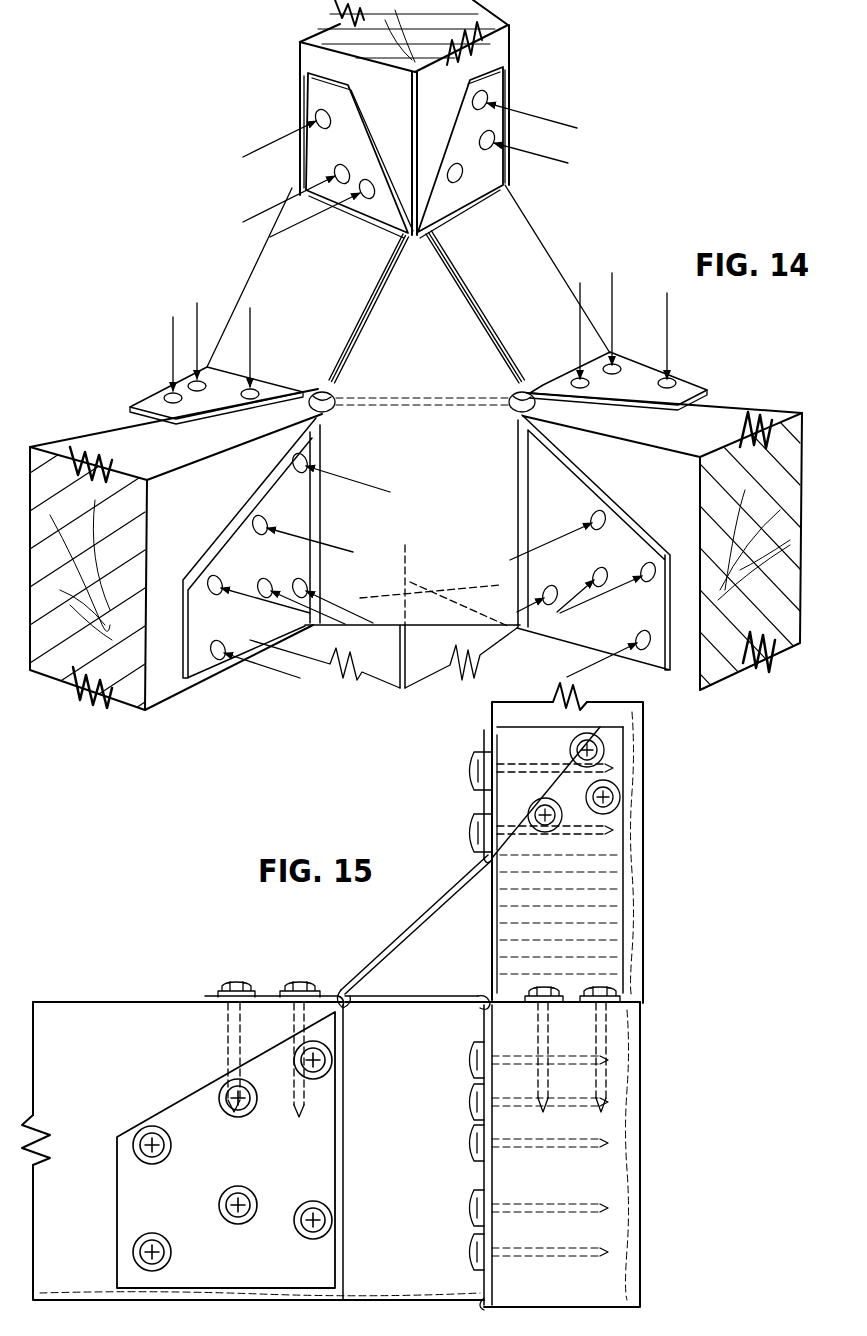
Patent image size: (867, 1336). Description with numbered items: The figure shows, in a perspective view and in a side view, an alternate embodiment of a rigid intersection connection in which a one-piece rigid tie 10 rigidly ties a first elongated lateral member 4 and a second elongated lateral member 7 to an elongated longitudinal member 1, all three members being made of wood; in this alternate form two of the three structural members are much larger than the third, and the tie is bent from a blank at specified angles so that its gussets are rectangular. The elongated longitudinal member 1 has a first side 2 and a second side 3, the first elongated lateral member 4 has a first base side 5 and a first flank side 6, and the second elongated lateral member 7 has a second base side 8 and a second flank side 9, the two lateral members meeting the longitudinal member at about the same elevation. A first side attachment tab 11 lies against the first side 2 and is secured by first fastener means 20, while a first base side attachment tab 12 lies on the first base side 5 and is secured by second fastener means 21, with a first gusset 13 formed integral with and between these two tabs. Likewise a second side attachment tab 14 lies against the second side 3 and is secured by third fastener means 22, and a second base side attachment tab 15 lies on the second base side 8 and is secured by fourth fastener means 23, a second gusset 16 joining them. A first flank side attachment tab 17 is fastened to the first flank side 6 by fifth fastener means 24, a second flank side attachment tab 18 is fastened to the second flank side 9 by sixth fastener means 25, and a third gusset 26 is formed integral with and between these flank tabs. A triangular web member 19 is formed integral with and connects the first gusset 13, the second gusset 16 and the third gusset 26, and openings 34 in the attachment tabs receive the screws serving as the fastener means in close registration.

In FIG. 14, the elongated longitudinal member 1 is at (288, 64).
In FIG. 15, the elongated longitudinal member 1 is at (650, 786).
In FIG. 14, the first side 2 is at (385, 108).
In FIG. 15, the first side 2 is at (490, 713).
In FIG. 14, the second side 3 is at (447, 108).
In FIG. 15, the second side 3 is at (528, 733).
In FIG. 14, the first elongated lateral member 4 is at (58, 428).
In FIG. 15, the first elongated lateral member 4 is at (68, 996).
In FIG. 14, the first base side 5 is at (139, 449).
In FIG. 15, the first base side 5 is at (118, 1003).
In FIG. 14, the first flank side 6 is at (192, 517).
In FIG. 15, the first flank side 6 is at (80, 1068).
In FIG. 14, the second elongated lateral member 7 is at (780, 406).
In FIG. 15, the second elongated lateral member 7 is at (644, 1065).
In FIG. 14, the second base side 8 is at (720, 439).
In FIG. 15, the second base side 8 is at (642, 998).
In FIG. 14, the second flank side 9 is at (674, 501).
In FIG. 15, the second flank side 9 is at (486, 1305).
In FIG. 14, the one-piece rigid tie 10 is at (516, 88).
In FIG. 15, the one-piece rigid tie 10 is at (625, 765).
In FIG. 14, the first side attachment tab 11 is at (312, 89).
In FIG. 15, the first side attachment tab 11 is at (483, 737).
In FIG. 14, the first base side attachment tab 12 is at (148, 405).
In FIG. 15, the first base side attachment tab 12 is at (218, 990).
In FIG. 14, the first gusset 13 is at (254, 266).
In FIG. 15, the first gusset 13 is at (432, 900).
In FIG. 14, the second side attachment tab 14 is at (500, 103).
In FIG. 15, the second side attachment tab 14 is at (616, 818).
In FIG. 14, the second base side attachment tab 15 is at (702, 387).
In FIG. 15, the second base side attachment tab 15 is at (554, 1012).
In FIG. 14, the second gusset 16 is at (533, 240).
In FIG. 15, the second gusset 16 is at (618, 897).
In FIG. 14, the first flank side attachment tab 17 is at (195, 663).
In FIG. 15, the first flank side attachment tab 17 is at (125, 1187).
In FIG. 14, the second flank side attachment tab 18 is at (655, 658).
In FIG. 15, the second flank side attachment tab 18 is at (478, 1032).
In FIG. 14, the triangular web member 19 is at (428, 318).
In FIG. 15, the triangular web member 19 is at (430, 958).
In FIG. 14, the first fastener means 20 is at (270, 200).
In FIG. 15, the first fastener means 20 is at (507, 771).
In FIG. 14, the second fastener means 21 is at (247, 333).
In FIG. 15, the second fastener means 21 is at (297, 1024).
In FIG. 14, the third fastener means 22 is at (563, 160).
In FIG. 15, the third fastener means 22 is at (602, 736).
In FIG. 14, the fourth fastener means 23 is at (667, 307).
In FIG. 15, the fourth fastener means 23 is at (609, 987).
In FIG. 14, the fifth fastener means 24 is at (348, 481).
In FIG. 15, the fifth fastener means 24 is at (172, 1145).
In FIG. 14, the sixth fastener means 25 is at (626, 585).
In FIG. 15, the sixth fastener means 25 is at (508, 1205).
In FIG. 14, the third gusset 26 is at (424, 622).
In FIG. 15, the third gusset 26 is at (368, 1288).
In FIG. 14, the openings 34 is at (330, 124).